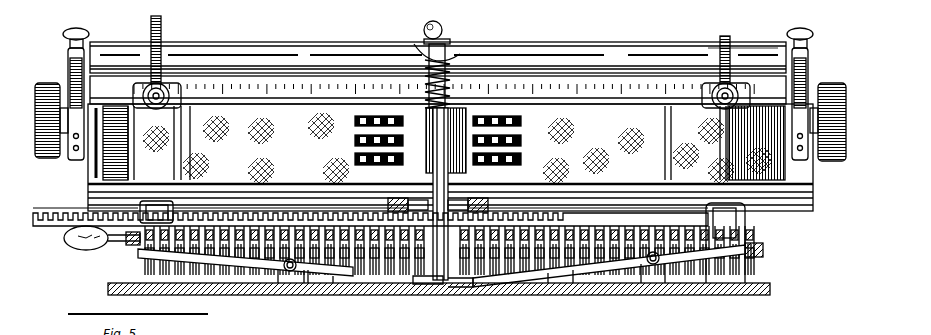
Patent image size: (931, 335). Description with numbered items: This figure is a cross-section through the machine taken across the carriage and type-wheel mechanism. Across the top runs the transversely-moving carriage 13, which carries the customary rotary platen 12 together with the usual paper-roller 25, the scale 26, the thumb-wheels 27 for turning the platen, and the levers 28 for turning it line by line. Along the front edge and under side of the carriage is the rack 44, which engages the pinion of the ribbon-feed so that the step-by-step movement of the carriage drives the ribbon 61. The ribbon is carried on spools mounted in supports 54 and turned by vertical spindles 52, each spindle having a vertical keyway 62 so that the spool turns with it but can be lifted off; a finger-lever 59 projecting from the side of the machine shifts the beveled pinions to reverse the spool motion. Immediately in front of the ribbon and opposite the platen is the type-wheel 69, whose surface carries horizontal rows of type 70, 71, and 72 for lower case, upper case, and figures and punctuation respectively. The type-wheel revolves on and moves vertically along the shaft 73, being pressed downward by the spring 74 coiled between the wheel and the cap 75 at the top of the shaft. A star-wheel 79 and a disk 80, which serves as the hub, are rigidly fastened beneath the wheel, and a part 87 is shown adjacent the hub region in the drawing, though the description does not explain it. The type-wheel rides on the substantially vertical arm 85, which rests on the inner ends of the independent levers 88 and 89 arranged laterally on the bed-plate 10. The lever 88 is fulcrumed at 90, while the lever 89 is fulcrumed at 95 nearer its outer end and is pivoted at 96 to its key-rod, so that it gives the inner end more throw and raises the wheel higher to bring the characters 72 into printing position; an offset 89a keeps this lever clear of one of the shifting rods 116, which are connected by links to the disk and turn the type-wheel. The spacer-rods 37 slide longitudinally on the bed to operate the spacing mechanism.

The bed-plate 10 is at (300, 283).
The rotary platen 12 is at (98, 143).
The carriage 13 is at (805, 200).
The paper-roller 25 is at (668, 37).
The scale 26 is at (593, 75).
The thumb-wheel 27 is at (37, 75).
The lever 28 is at (81, 27).
The spacer-rod 37 is at (318, 280).
The rack 44 is at (52, 212).
The spindle 52 is at (154, 33).
The support 54 is at (113, 238).
The finger-lever 59 is at (80, 240).
The ribbon 61 is at (300, 100).
The keyway 62 is at (148, 20).
The type-wheel 69 is at (398, 110).
The row of type 70 is at (438, 124).
The row of type 71 is at (438, 143).
The row of type 72 is at (438, 161).
The shaft 73 is at (450, 45).
The spring 74 is at (420, 45).
The cap 75 is at (434, 24).
The star-wheel 79 is at (530, 208).
The disk 80 is at (490, 205).
The arm 85 is at (410, 278).
The shaft 87 is at (420, 172).
The lever 88 is at (358, 262).
The lifting-lever 89 is at (570, 263).
The offset 89a is at (497, 280).
The fulcrum 90 is at (279, 265).
The fulcrum 95 is at (648, 258).
The pivot 96 is at (745, 252).
The shifting rod 116 is at (385, 247).